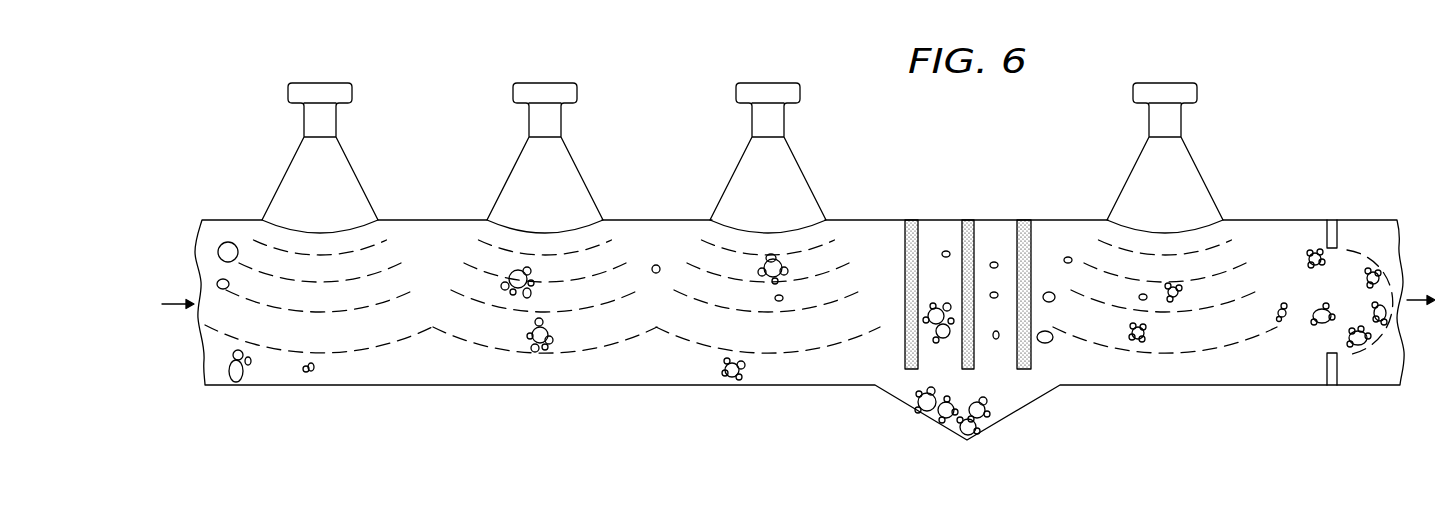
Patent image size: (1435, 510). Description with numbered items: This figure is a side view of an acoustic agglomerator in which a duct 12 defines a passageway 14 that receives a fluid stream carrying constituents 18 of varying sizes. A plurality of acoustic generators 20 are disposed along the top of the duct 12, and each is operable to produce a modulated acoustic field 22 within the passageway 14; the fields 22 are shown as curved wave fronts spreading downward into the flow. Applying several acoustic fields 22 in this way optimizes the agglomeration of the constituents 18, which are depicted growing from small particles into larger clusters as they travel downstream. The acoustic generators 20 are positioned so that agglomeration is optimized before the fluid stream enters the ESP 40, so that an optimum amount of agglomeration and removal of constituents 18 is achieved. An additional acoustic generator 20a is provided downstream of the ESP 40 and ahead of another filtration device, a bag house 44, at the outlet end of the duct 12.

The duct 12 is at (628, 386).
The passageway 14 is at (238, 230).
The constituents 18 is at (235, 381).
The acoustic generator 20 is at (304, 123).
The acoustic generator 20a is at (1149, 123).
The modulated acoustic field 22 is at (407, 337).
The ESP 40 is at (993, 218).
The bag house 44 is at (1360, 247).